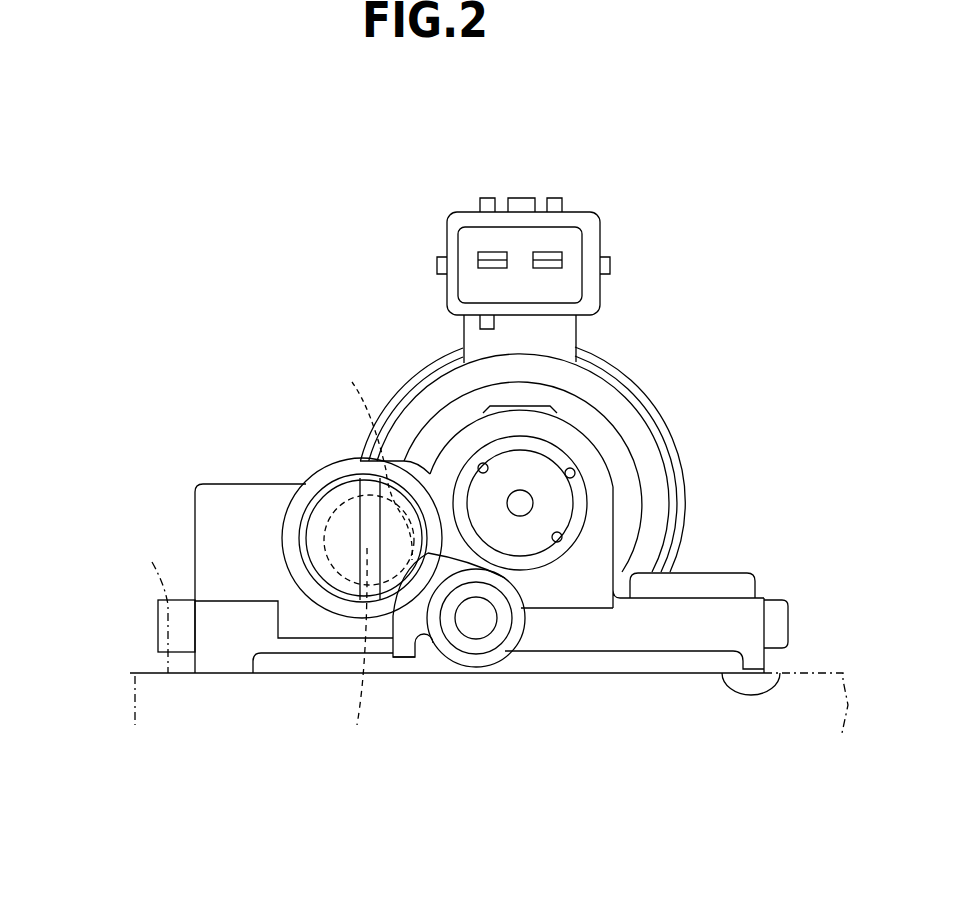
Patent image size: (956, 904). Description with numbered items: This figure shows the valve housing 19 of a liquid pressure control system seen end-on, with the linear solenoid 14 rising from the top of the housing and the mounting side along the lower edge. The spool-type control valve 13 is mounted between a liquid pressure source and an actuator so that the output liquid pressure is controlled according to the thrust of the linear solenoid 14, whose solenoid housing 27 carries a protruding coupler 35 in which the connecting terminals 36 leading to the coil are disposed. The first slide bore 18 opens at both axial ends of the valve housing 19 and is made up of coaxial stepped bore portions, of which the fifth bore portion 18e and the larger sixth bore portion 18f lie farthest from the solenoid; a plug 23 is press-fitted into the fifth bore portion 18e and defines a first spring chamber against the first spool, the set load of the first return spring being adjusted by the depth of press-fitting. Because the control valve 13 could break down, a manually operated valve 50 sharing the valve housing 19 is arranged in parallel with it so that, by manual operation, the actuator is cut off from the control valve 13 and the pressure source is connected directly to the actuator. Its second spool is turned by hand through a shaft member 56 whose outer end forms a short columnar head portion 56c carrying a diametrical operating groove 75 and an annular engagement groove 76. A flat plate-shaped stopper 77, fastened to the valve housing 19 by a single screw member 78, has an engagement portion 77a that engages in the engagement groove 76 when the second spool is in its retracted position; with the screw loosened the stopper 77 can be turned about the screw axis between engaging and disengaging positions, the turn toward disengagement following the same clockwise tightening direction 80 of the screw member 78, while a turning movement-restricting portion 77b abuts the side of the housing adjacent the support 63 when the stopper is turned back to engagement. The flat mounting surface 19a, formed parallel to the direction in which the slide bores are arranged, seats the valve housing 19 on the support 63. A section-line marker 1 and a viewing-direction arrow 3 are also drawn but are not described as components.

The section line I-I 1 is at (520, 140).
The viewing direction arrow III 3 is at (158, 453).
The spool-type control valve 13 is at (622, 520).
The linear solenoid 14 is at (667, 414).
The first slide bore 18 is at (578, 485).
The fifth bore portion 18e is at (478, 468).
The sixth bore portion 18f is at (558, 540).
The valve housing 19 is at (722, 580).
The flat mounting surface 19a is at (762, 694).
The plug 23 is at (527, 460).
The solenoid housing 27 is at (446, 357).
The coupler 35 is at (447, 247).
The connecting terminals 36 is at (547, 258).
The manually operated valve 50 is at (315, 474).
The valve stem 56 is at (317, 593).
The head portion 56c is at (323, 518).
The support 63 is at (153, 634).
The operating groove 75 is at (360, 485).
The annular engagement groove 76 is at (343, 641).
The flat plate-shaped stopper 77 is at (512, 638).
The engagement portion 77a is at (355, 458).
The turning movement-restricting portion 77b is at (400, 658).
The screw member 78 is at (460, 572).
The direction of tightening the screw member 80 is at (445, 555).